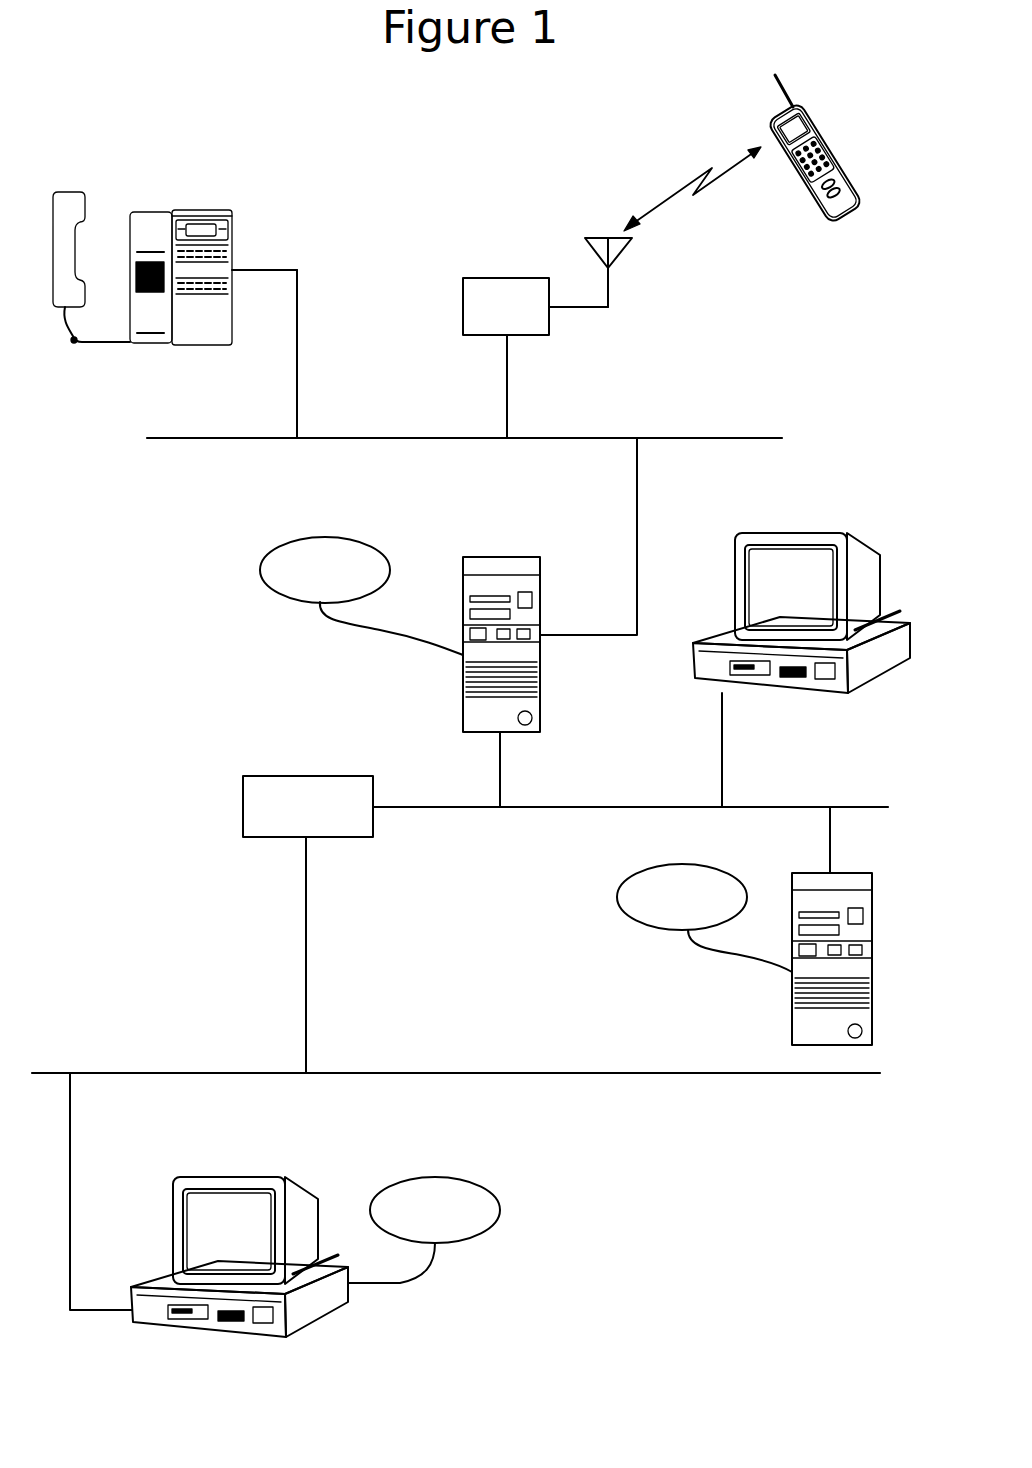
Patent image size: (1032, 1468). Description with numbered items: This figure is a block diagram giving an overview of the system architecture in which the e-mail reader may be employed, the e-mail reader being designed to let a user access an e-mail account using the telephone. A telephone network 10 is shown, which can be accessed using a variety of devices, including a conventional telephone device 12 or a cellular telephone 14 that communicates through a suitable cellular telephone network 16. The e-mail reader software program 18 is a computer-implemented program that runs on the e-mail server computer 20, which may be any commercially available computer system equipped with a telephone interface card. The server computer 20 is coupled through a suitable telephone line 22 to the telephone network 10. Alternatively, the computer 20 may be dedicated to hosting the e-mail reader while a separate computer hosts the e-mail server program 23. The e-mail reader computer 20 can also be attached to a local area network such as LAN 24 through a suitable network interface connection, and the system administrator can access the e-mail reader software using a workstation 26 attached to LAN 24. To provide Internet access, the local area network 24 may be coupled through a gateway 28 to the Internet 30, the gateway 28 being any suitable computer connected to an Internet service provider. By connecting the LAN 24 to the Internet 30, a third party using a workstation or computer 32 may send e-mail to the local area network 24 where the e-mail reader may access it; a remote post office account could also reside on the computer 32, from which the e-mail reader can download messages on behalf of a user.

The telephone network 10 is at (385, 441).
The conventional telephone device 12 is at (243, 228).
The cellular telephone 14 is at (830, 226).
The cellular telephone network 16 is at (527, 335).
The e-mail reader software program 18 is at (272, 590).
The e-mail server computer 20 is at (541, 592).
The telephone line 22 is at (633, 510).
The e-mail server program 23 is at (622, 912).
The local area network 24 is at (605, 808).
The workstation 26 is at (736, 540).
The gateway 28 is at (243, 825).
The Internet 30 is at (408, 1073).
The workstation or computer 32 is at (173, 1193).